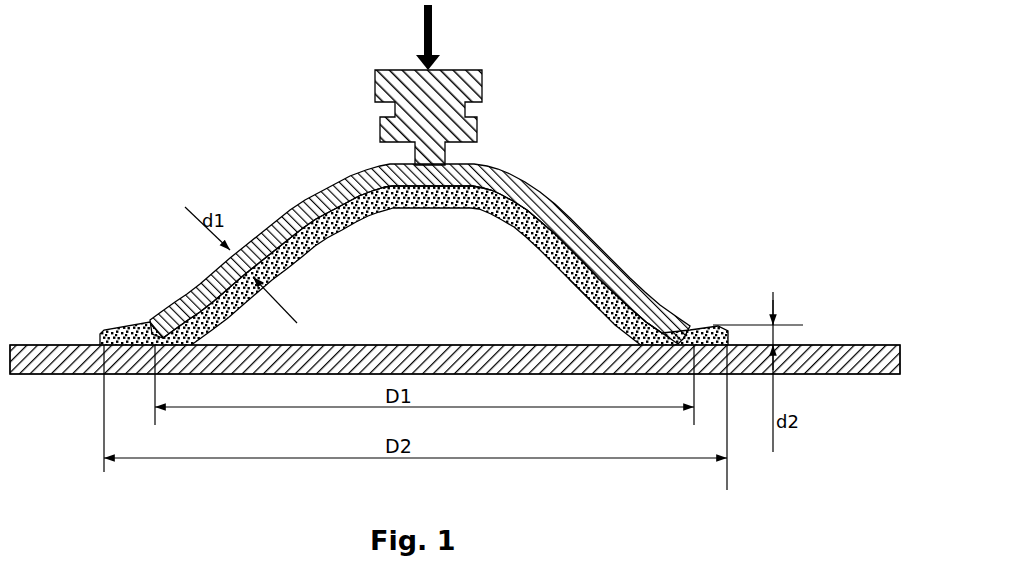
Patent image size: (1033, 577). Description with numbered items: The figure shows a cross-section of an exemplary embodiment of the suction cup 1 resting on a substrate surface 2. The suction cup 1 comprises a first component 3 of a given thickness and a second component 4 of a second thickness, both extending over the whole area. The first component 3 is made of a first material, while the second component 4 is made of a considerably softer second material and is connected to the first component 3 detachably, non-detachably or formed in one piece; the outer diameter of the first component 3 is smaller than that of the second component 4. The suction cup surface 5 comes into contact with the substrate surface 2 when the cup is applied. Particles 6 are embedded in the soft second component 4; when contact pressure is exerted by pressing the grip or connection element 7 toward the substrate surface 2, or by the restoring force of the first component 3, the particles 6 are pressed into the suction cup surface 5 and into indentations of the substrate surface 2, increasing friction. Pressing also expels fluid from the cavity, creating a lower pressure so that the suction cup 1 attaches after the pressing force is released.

The suction cup 1 is at (208, 118).
The substrate surface 2 is at (850, 345).
The first component 3 is at (536, 190).
The second component 4 is at (596, 250).
The suction cup surface 5 is at (574, 392).
The particles 6 is at (646, 409).
The grip or connection element 7 is at (482, 80).